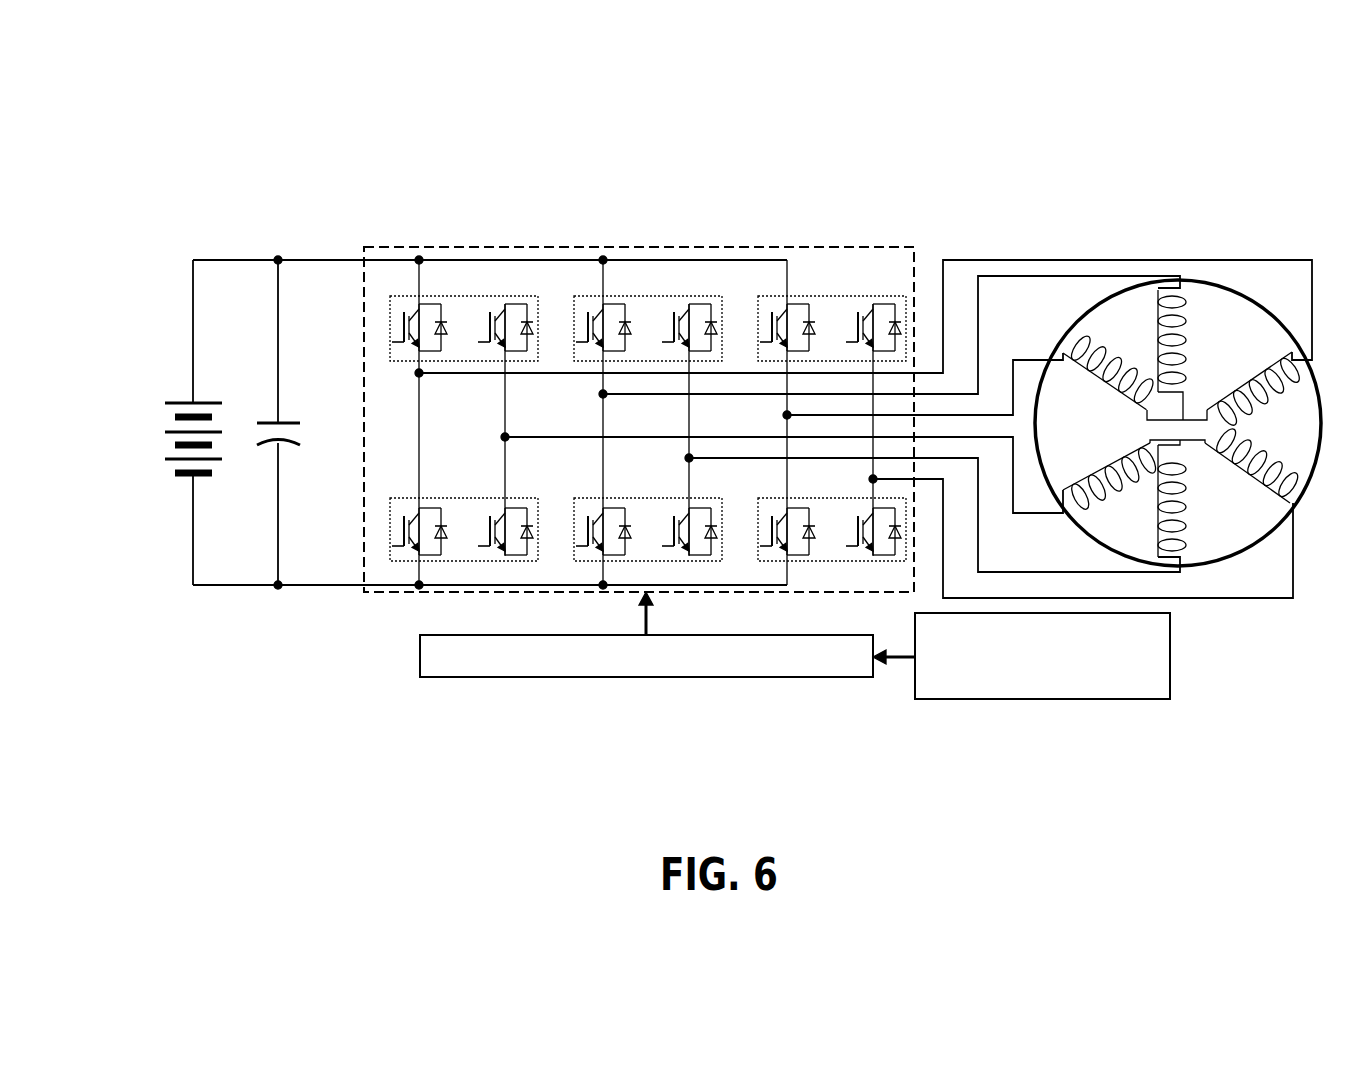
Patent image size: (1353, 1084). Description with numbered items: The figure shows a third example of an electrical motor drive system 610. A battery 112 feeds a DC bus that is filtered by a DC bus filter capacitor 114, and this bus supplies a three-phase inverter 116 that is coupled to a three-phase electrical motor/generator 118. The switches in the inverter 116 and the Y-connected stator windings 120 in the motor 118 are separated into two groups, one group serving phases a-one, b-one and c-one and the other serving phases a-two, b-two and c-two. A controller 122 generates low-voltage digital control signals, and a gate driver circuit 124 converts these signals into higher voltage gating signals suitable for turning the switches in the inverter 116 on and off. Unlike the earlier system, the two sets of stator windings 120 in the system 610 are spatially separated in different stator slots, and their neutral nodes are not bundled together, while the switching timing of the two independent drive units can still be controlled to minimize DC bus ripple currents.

The electrical motor drive system 610 is at (183, 206).
The battery 112 is at (192, 400).
The DC bus filter capacitor 114 is at (282, 443).
The three-phase inverter 116 is at (915, 242).
The three-phase electrical motor/generator 118 is at (1245, 297).
The Y-connected stator windings 120 is at (1242, 473).
The controller 122 is at (1007, 702).
The gate driver circuit 124 is at (715, 680).